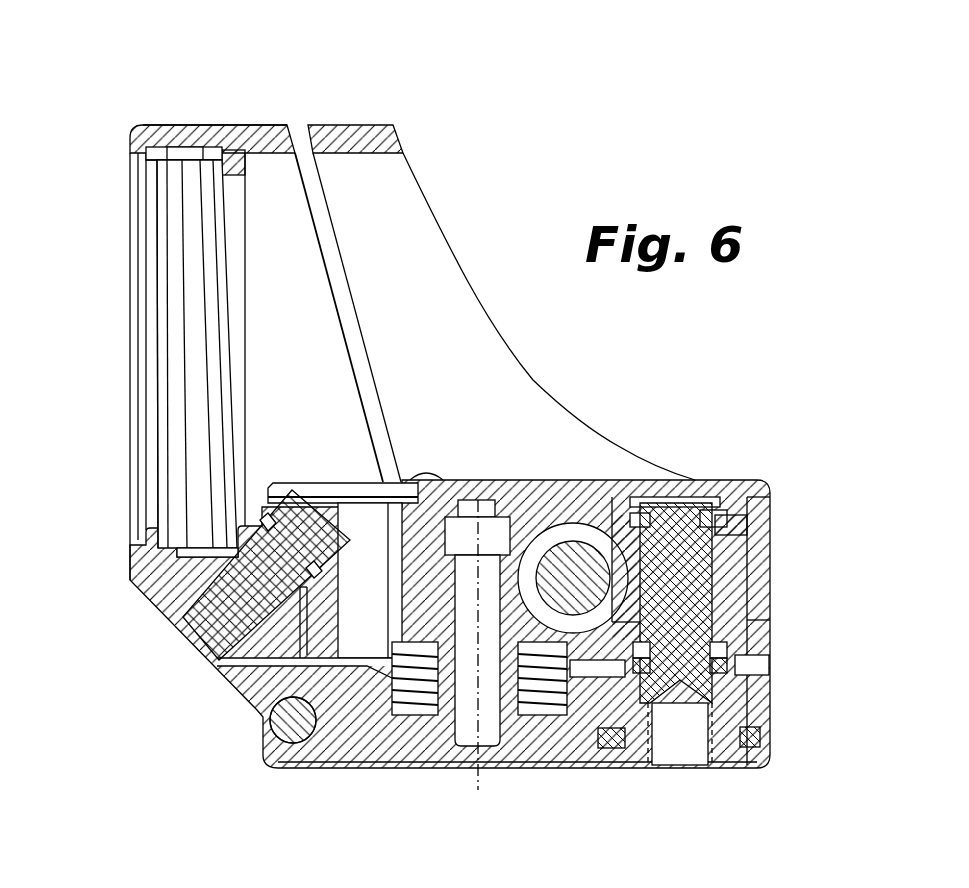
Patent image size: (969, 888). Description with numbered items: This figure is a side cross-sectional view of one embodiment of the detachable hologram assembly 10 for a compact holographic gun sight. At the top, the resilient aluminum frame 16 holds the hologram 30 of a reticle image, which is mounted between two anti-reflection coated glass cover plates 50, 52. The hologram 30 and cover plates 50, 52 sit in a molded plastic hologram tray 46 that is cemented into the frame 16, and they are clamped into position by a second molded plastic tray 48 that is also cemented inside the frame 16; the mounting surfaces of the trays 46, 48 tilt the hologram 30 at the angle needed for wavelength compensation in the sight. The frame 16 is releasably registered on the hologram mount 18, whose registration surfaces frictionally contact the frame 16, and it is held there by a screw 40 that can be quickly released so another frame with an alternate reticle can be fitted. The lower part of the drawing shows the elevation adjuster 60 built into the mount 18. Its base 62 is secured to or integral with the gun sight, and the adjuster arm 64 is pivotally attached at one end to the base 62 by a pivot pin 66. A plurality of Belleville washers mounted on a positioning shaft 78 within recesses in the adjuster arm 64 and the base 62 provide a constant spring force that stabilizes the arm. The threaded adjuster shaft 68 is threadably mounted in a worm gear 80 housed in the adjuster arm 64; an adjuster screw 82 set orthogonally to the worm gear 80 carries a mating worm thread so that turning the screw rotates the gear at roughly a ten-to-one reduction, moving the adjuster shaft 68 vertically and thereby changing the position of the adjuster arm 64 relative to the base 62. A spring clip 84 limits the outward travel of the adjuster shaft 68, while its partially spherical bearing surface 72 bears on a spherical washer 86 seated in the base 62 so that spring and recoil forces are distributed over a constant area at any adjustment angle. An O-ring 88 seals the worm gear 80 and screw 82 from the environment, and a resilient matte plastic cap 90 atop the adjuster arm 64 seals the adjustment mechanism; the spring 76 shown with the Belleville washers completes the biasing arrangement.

The detachable hologram assembly 10 is at (142, 72).
The resilient frame 16 is at (200, 125).
The hologram mount 18 is at (327, 632).
The hologram 30 is at (185, 192).
The screw 40 is at (318, 522).
The hologram tray 46 is at (146, 128).
The second molded plastic tray 48 is at (236, 146).
The glass cover plate 50 is at (177, 290).
The glass cover plate 52 is at (216, 287).
The adjuster 60 is at (694, 451).
The base 62 is at (412, 760).
The adjuster arm 64 is at (760, 567).
The pivot pin 66 is at (303, 740).
The adjuster shaft 68 is at (745, 612).
The bearing surface 72 is at (605, 748).
The spring 76 is at (595, 677).
The positioning shaft 78 is at (494, 522).
The worm gear 80 is at (752, 520).
The adjuster screw 82 is at (578, 557).
The spring clip 84 is at (718, 512).
The spherical washer 86 is at (755, 725).
The O-ring 88 is at (745, 655).
The cap 90 is at (568, 490).